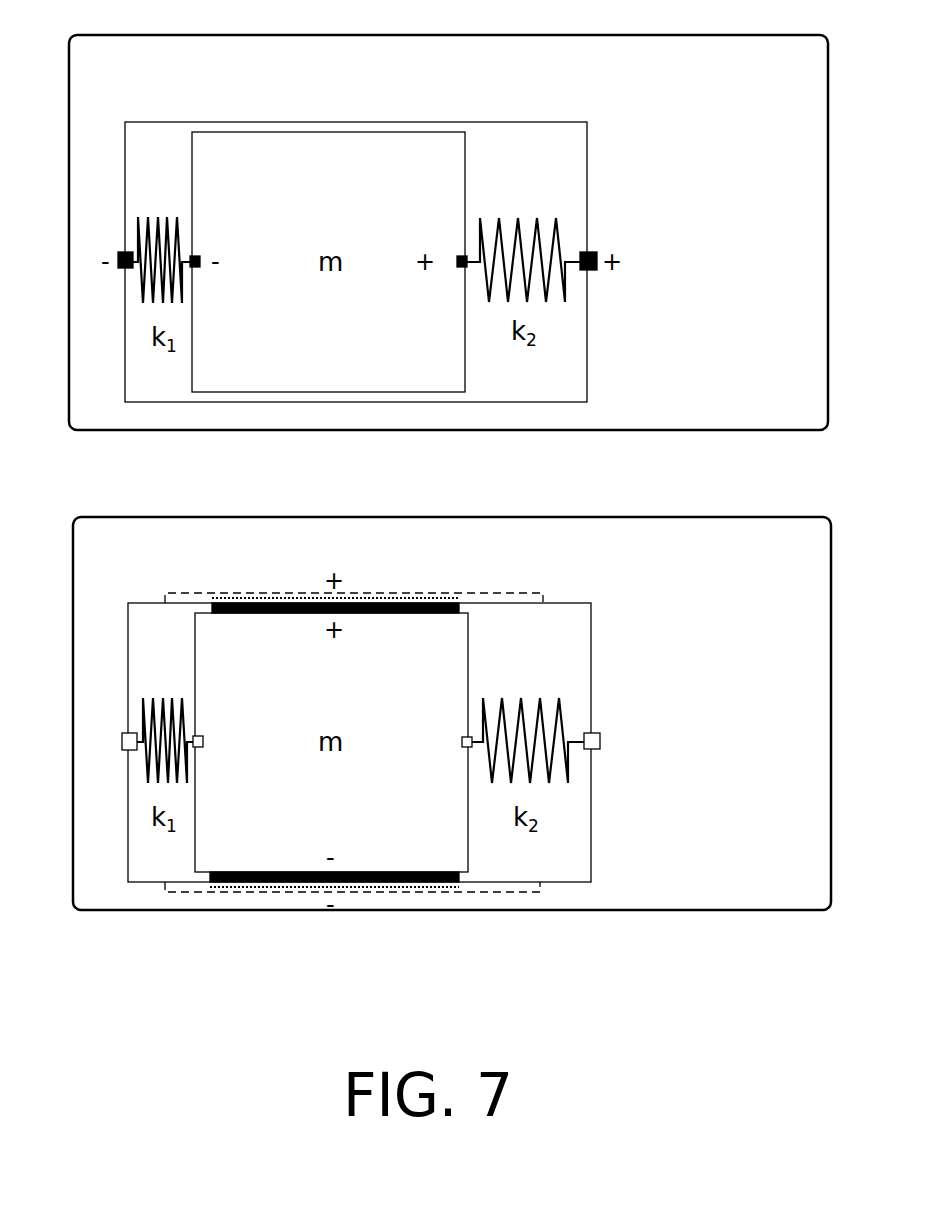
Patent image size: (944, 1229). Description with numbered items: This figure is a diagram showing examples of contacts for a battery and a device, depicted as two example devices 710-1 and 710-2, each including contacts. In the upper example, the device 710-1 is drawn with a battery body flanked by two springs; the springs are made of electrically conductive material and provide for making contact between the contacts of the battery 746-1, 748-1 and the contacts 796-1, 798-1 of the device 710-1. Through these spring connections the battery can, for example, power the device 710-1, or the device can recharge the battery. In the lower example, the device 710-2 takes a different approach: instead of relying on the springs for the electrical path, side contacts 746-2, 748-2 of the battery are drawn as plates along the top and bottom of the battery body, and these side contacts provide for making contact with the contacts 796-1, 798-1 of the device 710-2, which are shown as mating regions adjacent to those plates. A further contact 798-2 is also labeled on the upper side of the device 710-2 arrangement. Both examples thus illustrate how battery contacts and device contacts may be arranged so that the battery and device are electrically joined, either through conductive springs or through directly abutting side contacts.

The device 710-1 is at (625, 35).
The device 710-2 is at (637, 518).
The contact of the device 796-1 is at (122, 252).
The contact of the device 798-1 is at (593, 252).
The contact of a battery 746-1 is at (200, 255).
The contact of a battery 748-1 is at (460, 268).
The upper fixed electrode 798-2 is at (395, 596).
The side contact of a battery 748-2 is at (305, 614).
The side contact of a battery 746-2 is at (358, 872).